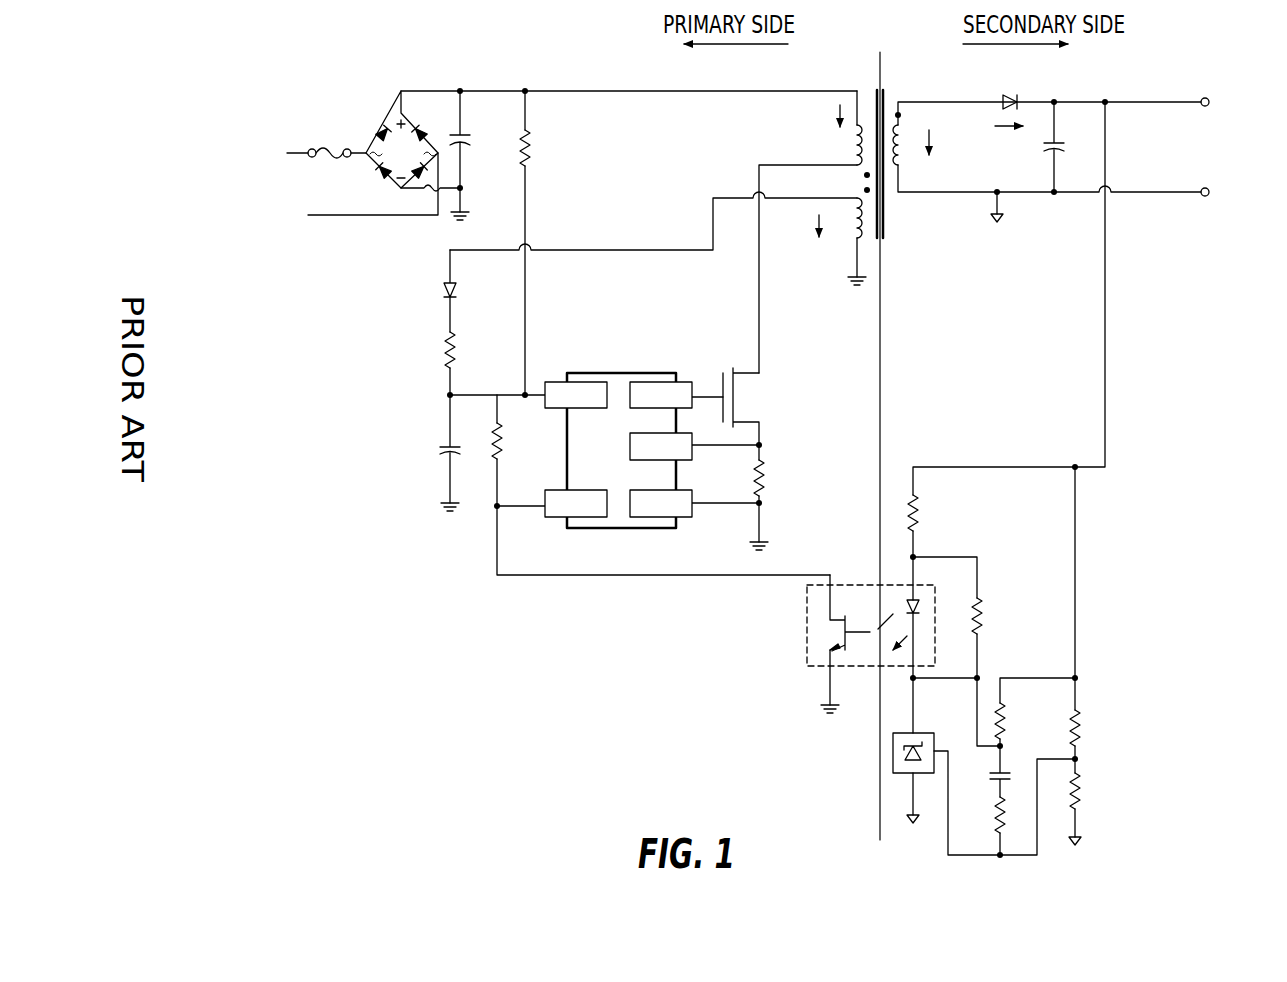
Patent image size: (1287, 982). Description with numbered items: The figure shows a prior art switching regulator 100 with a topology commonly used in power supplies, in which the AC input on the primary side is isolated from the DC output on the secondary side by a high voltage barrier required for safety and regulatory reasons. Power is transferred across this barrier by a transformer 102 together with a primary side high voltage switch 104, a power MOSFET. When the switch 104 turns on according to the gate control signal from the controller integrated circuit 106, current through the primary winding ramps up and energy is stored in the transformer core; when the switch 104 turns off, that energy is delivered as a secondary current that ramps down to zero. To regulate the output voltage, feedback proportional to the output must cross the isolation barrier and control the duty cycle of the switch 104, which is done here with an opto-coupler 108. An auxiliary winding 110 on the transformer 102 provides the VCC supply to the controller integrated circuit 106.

The switching regulator 100 is at (396, 606).
The transformer 102 is at (888, 62).
The power MOSFET switch 104 is at (752, 391).
The controller integrated circuit 106 is at (616, 532).
The opto-coupler 108 is at (789, 680).
The auxiliary winding 110 is at (869, 247).